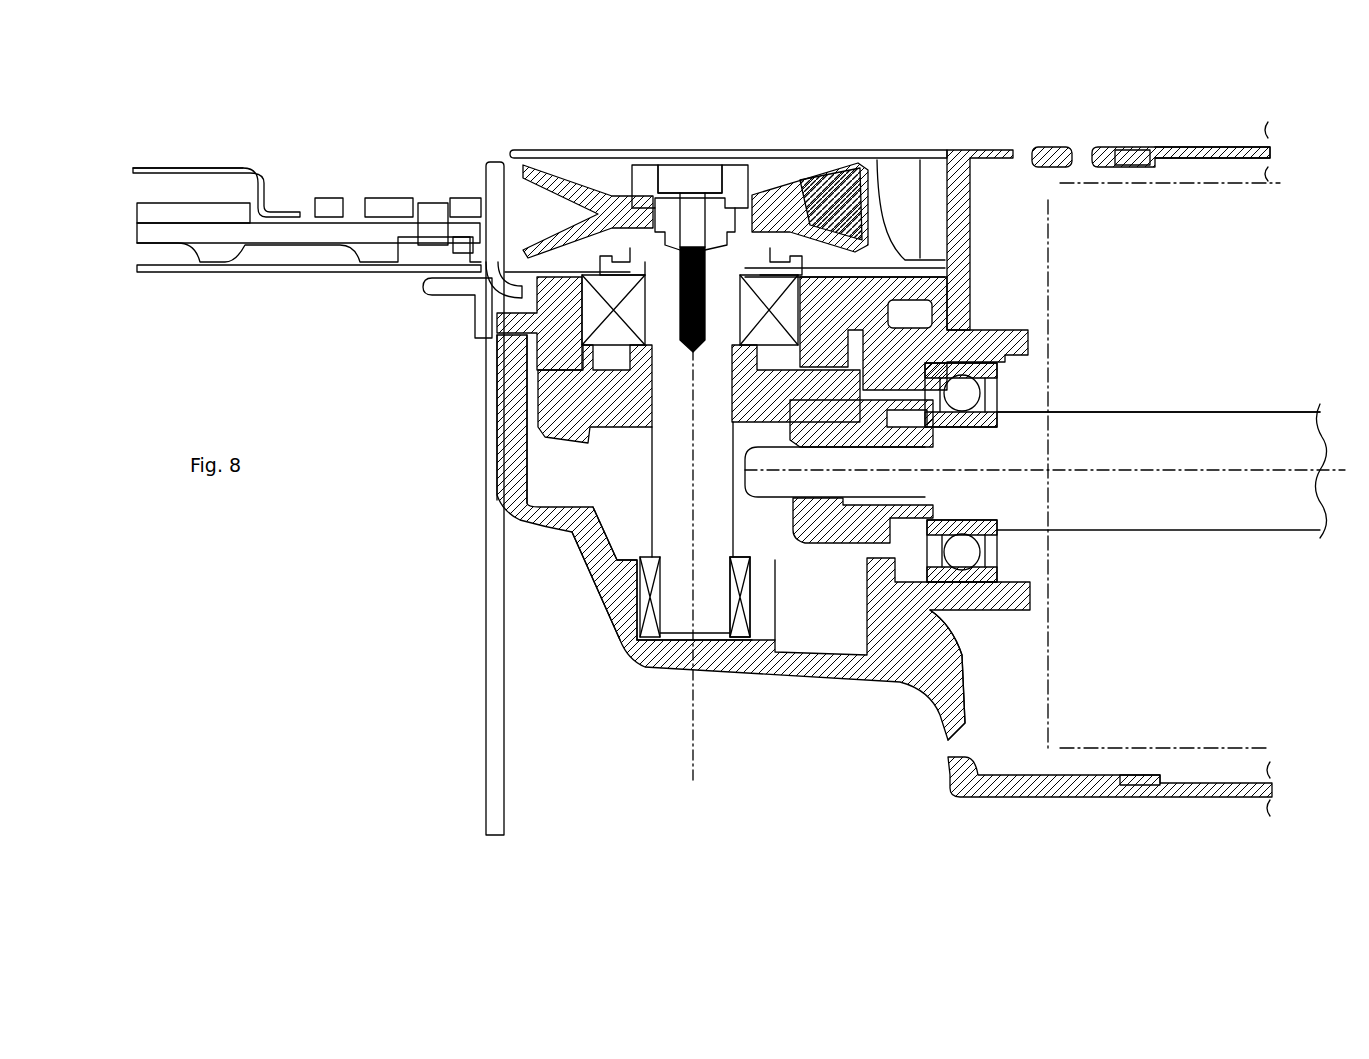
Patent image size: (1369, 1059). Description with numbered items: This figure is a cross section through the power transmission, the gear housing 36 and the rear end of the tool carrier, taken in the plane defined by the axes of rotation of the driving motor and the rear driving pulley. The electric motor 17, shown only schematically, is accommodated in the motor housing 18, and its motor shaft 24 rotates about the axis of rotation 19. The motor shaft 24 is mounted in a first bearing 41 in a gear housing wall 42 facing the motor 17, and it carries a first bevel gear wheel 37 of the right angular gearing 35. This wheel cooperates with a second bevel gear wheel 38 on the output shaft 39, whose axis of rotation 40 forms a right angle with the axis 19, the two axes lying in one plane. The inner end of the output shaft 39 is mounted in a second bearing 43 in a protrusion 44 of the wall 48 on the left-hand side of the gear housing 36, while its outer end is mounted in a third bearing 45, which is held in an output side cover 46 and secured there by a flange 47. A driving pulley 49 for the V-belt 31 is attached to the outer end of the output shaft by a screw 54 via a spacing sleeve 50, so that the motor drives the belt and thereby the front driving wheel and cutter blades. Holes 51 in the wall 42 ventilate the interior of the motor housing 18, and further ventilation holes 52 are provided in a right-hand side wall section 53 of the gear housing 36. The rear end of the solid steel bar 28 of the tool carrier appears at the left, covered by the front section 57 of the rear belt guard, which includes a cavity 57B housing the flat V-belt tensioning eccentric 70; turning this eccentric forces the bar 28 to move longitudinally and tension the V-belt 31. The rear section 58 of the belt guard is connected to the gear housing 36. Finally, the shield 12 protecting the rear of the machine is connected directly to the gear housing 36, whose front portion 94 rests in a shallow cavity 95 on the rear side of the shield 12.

The shield 12 is at (487, 577).
The electric motor 17 is at (1200, 183).
The motor housing 18 is at (1208, 150).
The axis of rotation 19 is at (1165, 462).
The motor shaft 24 is at (1165, 455).
The bar 28 is at (224, 205).
The V-belt 31 is at (870, 185).
The right angular gearing 35 is at (828, 615).
The gear housing 36 is at (600, 592).
The first bevel gear wheel 37 is at (840, 547).
The second bevel gear wheel 38 is at (590, 445).
The output shaft 39 is at (713, 632).
The axis of rotation of the output shaft 40 is at (692, 705).
The first bearing 41 is at (1003, 394).
The gear housing wall 42 is at (962, 242).
The second bearing 43 is at (628, 658).
The protrusion 44 is at (768, 655).
The third bearing 45 is at (483, 313).
The output side cover 46 is at (495, 358).
The flange 47 is at (925, 258).
The wall 48 is at (740, 597).
The driving pulley 49 is at (553, 165).
The spacing sleeve 50 is at (745, 180).
The holes 51 is at (945, 742).
The ventilation holes 52 is at (1075, 148).
The right hand side wall section 53 is at (1112, 160).
The screw 54 is at (690, 180).
The front section of the rear belt guard 57 is at (142, 168).
The cavity 57B is at (303, 200).
The rear section of the belt guard 58 is at (818, 163).
The V-belt tensioning eccentric 70 is at (385, 205).
The front portion of the gear housing 94 is at (497, 405).
The shallow cavity 95 is at (507, 479).